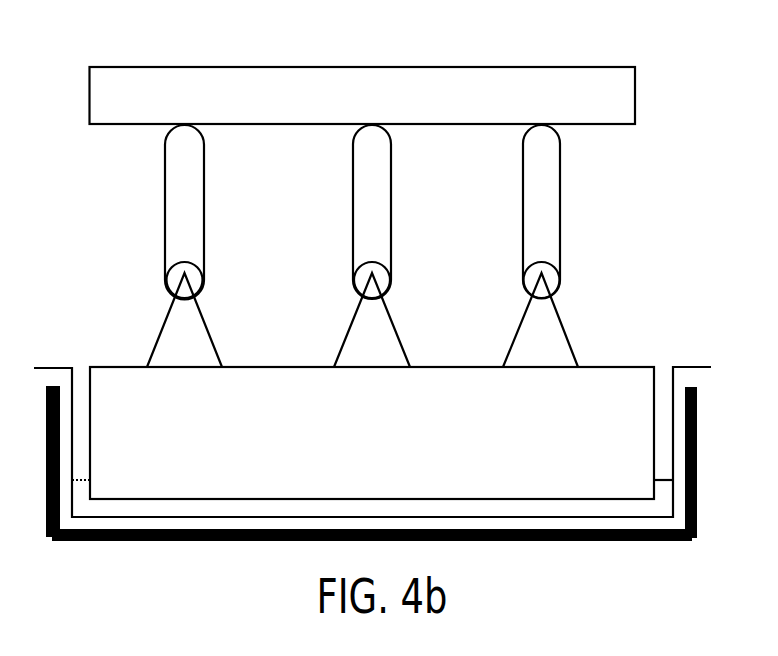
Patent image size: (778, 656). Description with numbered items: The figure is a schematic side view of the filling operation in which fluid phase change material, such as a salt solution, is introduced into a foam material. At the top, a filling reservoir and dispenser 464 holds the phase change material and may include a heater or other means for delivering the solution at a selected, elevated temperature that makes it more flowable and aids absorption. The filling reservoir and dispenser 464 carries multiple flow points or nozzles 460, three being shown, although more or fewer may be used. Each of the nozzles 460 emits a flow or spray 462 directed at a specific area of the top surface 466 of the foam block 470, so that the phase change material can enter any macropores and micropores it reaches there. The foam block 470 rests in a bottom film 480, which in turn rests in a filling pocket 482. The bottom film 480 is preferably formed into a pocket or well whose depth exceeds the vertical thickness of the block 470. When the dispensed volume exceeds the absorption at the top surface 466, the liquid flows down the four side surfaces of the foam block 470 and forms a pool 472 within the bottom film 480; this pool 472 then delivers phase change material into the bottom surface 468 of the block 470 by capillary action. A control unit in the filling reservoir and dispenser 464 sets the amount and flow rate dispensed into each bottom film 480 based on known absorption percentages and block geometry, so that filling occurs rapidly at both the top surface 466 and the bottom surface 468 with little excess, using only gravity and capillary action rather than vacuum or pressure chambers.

The nozzles 460 is at (560, 208).
The flow or spray 462 is at (561, 320).
The filling reservoir and dispenser 464 is at (370, 67).
The top surface 466 is at (113, 368).
The bottom surface 468 is at (155, 497).
The foam block 470 is at (644, 366).
The pool 472 is at (553, 510).
The bottom film 480 is at (60, 368).
The filling pocket 482 is at (223, 543).